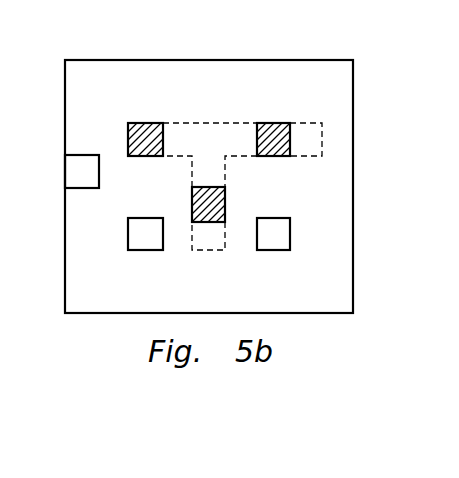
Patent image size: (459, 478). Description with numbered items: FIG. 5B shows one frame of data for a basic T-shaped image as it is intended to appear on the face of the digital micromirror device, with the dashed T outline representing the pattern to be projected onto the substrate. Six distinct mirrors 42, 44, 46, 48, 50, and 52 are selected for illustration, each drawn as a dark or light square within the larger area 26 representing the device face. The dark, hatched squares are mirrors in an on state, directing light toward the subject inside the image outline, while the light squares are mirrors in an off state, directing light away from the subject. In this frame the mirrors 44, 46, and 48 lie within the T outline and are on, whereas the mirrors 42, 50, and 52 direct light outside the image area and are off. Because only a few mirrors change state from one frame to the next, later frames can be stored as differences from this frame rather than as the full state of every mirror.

The chip 26 is at (224, 60).
The mirror 42 is at (85, 188).
The mirror 44 is at (148, 123).
The mirror 46 is at (271, 123).
The mirror 48 is at (228, 203).
The mirror 50 is at (272, 250).
The mirror 52 is at (143, 250).